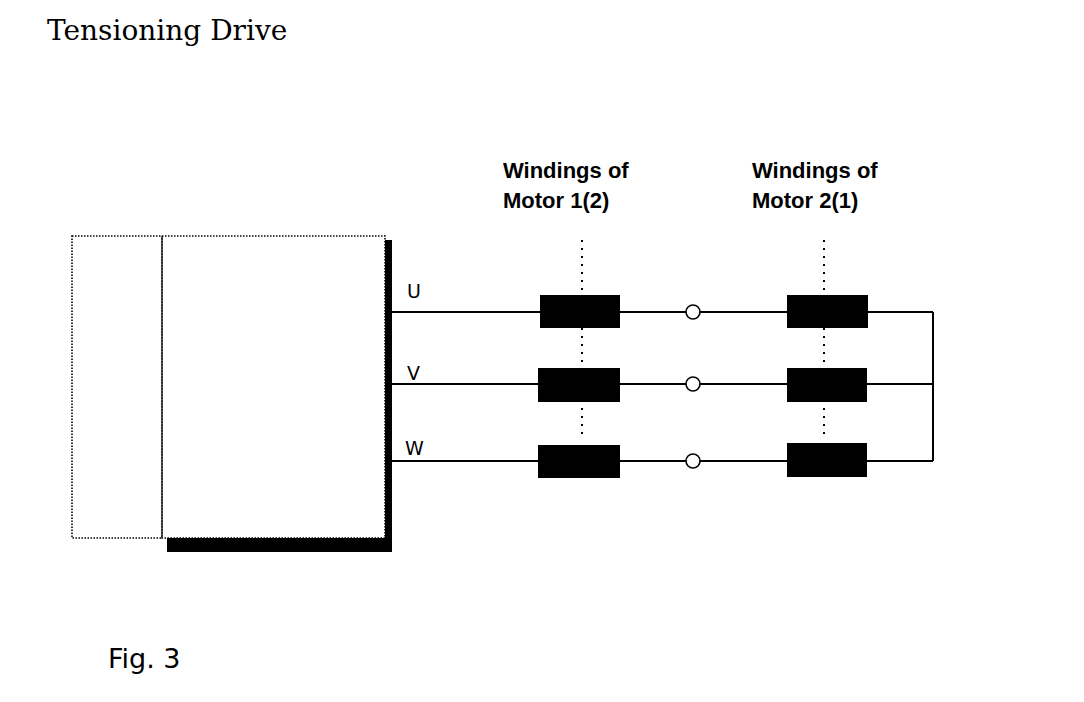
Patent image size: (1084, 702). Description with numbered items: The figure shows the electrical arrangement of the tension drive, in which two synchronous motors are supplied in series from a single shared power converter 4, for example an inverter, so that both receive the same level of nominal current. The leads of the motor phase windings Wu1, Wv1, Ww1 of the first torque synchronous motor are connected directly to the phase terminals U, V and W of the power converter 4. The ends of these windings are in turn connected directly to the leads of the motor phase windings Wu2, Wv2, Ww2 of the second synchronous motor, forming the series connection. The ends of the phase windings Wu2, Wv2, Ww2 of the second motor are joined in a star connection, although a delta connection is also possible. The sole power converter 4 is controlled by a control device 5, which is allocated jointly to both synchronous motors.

The power converter 4 is at (307, 487).
The control device 5 is at (103, 272).
The motor phase winding Wu1 is at (597, 295).
The motor phase winding Wv1 is at (593, 368).
The motor phase winding Ww1 is at (605, 445).
The motor phase winding Wu2 is at (847, 295).
The motor phase winding Wv2 is at (835, 368).
The motor phase winding Ww2 is at (835, 443).